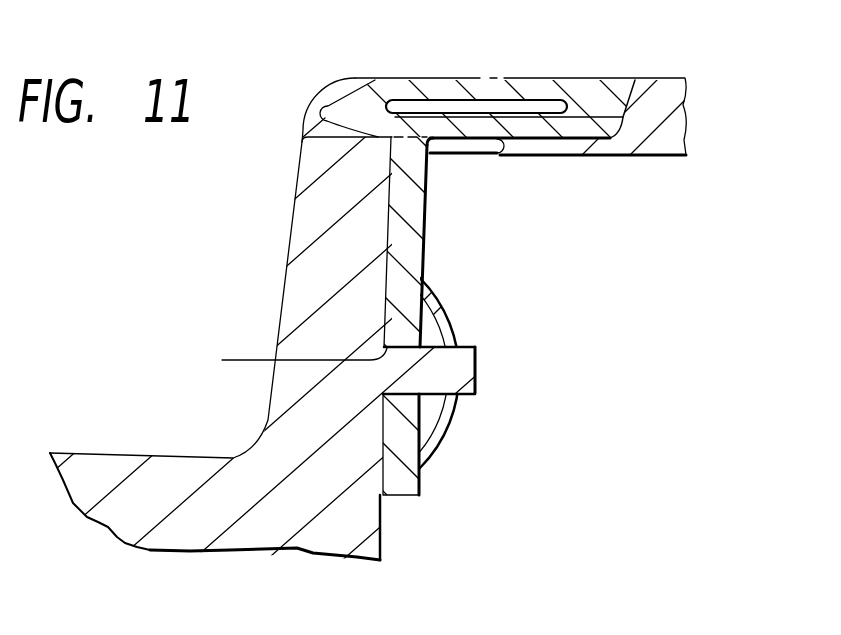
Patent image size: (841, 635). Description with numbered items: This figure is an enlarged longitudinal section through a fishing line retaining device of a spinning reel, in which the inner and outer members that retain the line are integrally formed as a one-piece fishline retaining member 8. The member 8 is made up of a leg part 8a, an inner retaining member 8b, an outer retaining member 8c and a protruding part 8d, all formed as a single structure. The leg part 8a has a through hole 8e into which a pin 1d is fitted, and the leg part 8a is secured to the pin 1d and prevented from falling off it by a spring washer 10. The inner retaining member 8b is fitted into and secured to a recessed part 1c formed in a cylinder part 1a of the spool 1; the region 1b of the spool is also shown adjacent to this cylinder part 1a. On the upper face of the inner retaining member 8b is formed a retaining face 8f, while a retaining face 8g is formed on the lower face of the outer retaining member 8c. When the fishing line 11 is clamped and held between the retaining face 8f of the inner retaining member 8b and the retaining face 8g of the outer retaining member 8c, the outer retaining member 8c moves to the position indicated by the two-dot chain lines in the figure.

The spool 1 is at (287, 235).
The cylinder part 1a is at (665, 88).
The bore edge 1b is at (493, 150).
The recessed part 1c is at (635, 82).
The pin 1d is at (476, 362).
The fishline retaining member 8 is at (609, 110).
The leg part 8a is at (412, 253).
The inner retaining member 8b is at (572, 138).
The outer retaining member 8c is at (424, 88).
The protruding part 8d is at (322, 112).
The through hole 8e is at (288, 358).
The retaining face 8f is at (571, 117).
The retaining face 8g is at (465, 113).
The spring washer 10 is at (448, 420).
The fishing line 11 is at (505, 100).